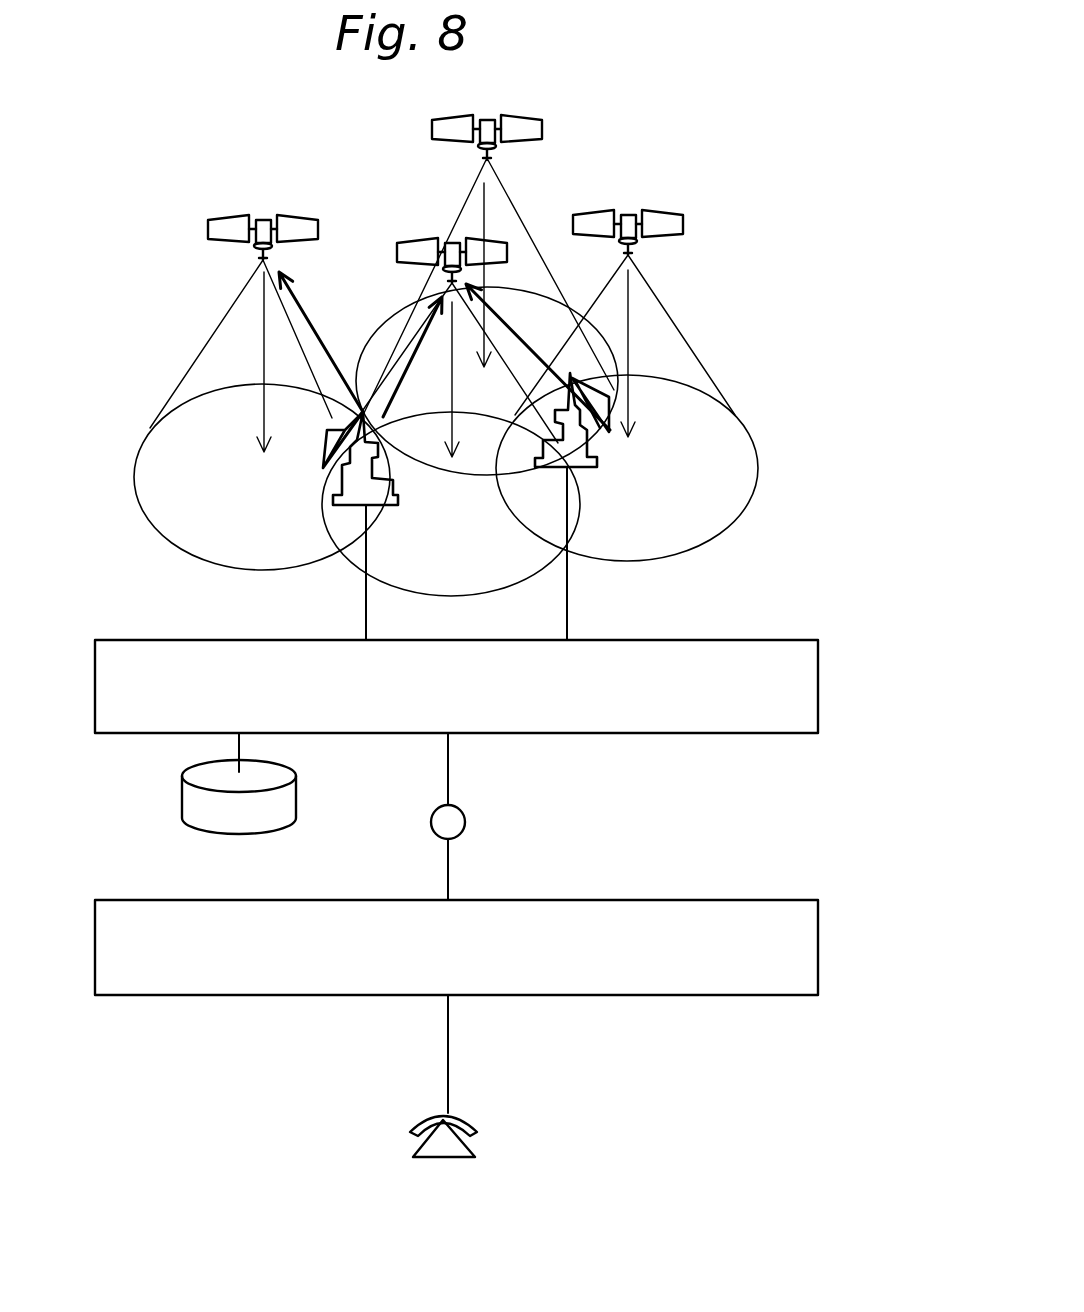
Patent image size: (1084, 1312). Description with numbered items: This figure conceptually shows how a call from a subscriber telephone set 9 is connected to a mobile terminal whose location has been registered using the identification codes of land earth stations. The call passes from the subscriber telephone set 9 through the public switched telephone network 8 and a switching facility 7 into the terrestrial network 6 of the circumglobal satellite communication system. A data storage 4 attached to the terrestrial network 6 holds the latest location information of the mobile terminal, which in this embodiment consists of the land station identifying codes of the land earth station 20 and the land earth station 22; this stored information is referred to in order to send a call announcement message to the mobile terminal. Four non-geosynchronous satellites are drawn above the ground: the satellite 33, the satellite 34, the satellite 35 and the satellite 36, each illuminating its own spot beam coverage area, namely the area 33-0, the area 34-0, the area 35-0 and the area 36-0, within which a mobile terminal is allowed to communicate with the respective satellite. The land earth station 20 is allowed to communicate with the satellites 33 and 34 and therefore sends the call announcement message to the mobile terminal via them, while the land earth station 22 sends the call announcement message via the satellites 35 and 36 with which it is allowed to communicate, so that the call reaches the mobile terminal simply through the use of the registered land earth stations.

The non-geosynchronous satellite 36 is at (453, 117).
The non-geosynchronous satellite 33 is at (233, 219).
The non-geosynchronous satellite 34 is at (413, 239).
The non-geosynchronous satellite 35 is at (603, 208).
The spot beam coverage area 36-0 is at (365, 343).
The spot beam coverage area 33-0 is at (262, 477).
The spot beam coverage area 34-0 is at (451, 504).
The spot beam coverage area 35-0 is at (735, 522).
The land earth station 20 is at (345, 486).
The land earth station 22 is at (575, 392).
The terrestrial network 6 is at (130, 640).
The data storage 4 is at (180, 808).
The switching facility 7 is at (465, 818).
The public switched telephone network 8 is at (134, 997).
The subscriber telephone set 9 is at (462, 1112).